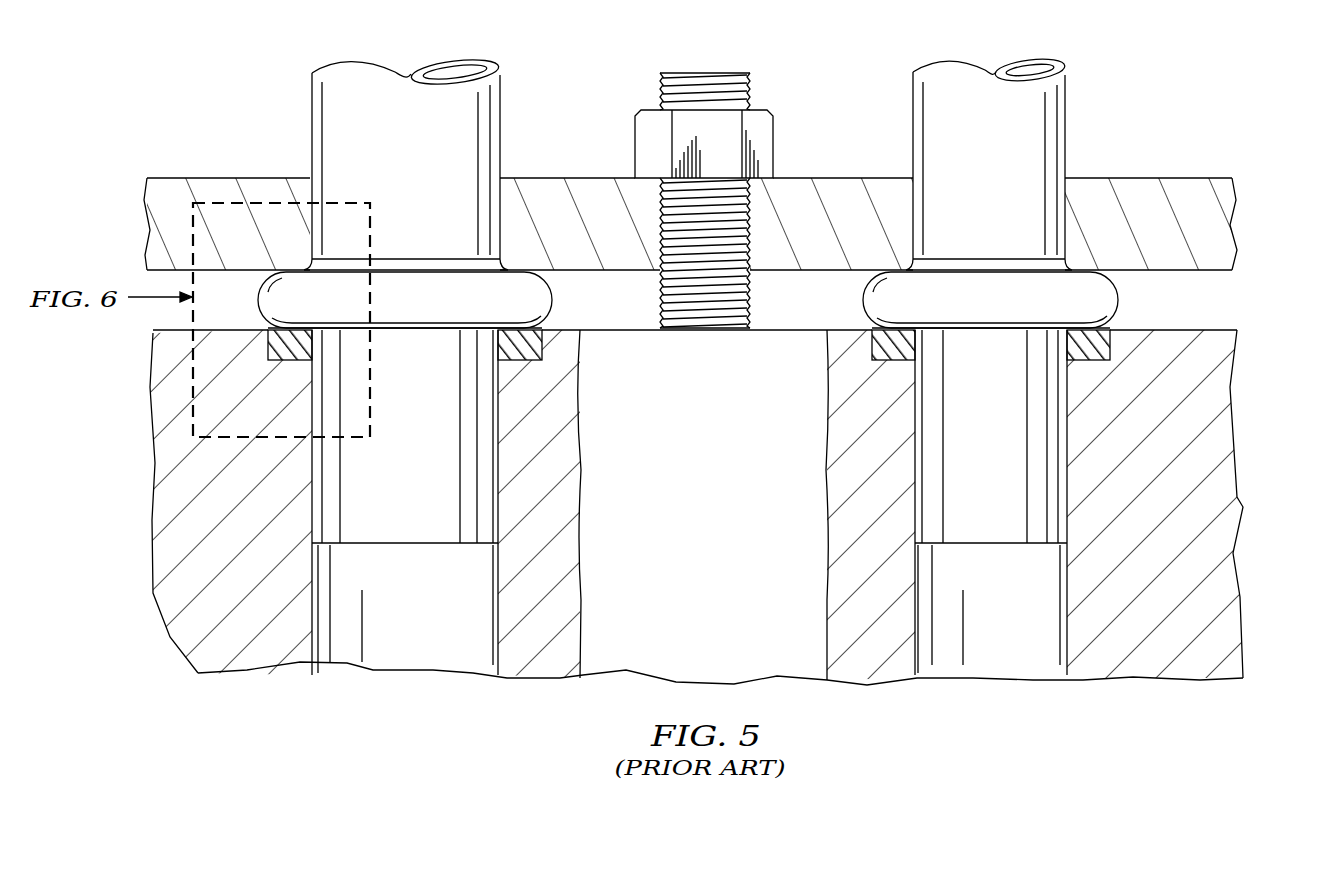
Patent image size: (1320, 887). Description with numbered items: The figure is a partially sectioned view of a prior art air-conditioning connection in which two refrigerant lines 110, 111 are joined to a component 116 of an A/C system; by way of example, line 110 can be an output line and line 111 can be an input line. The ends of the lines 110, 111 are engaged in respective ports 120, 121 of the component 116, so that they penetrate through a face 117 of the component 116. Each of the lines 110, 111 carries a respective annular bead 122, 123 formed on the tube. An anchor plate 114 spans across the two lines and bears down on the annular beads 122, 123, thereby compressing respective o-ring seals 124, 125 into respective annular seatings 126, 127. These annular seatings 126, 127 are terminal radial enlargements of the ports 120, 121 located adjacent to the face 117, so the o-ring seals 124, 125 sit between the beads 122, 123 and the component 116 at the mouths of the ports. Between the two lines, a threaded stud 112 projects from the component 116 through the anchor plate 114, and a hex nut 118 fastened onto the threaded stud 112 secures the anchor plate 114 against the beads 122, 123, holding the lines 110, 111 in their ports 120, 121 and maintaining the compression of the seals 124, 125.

The refrigerant line 110 is at (311, 110).
The refrigerant line 111 is at (1066, 112).
The threaded stud 112 is at (722, 73).
The anchor plate 114 is at (1200, 178).
The component 116 is at (1238, 506).
The face 117 is at (570, 330).
The hex nut 118 is at (773, 132).
The port 120 is at (493, 664).
The port 121 is at (1062, 670).
The annular bead 122 is at (428, 276).
The annular bead 123 is at (982, 276).
The o-ring seal 124 is at (520, 330).
The o-ring seal 125 is at (1085, 330).
The annular seating 126 is at (517, 360).
The annular seating 127 is at (1078, 360).